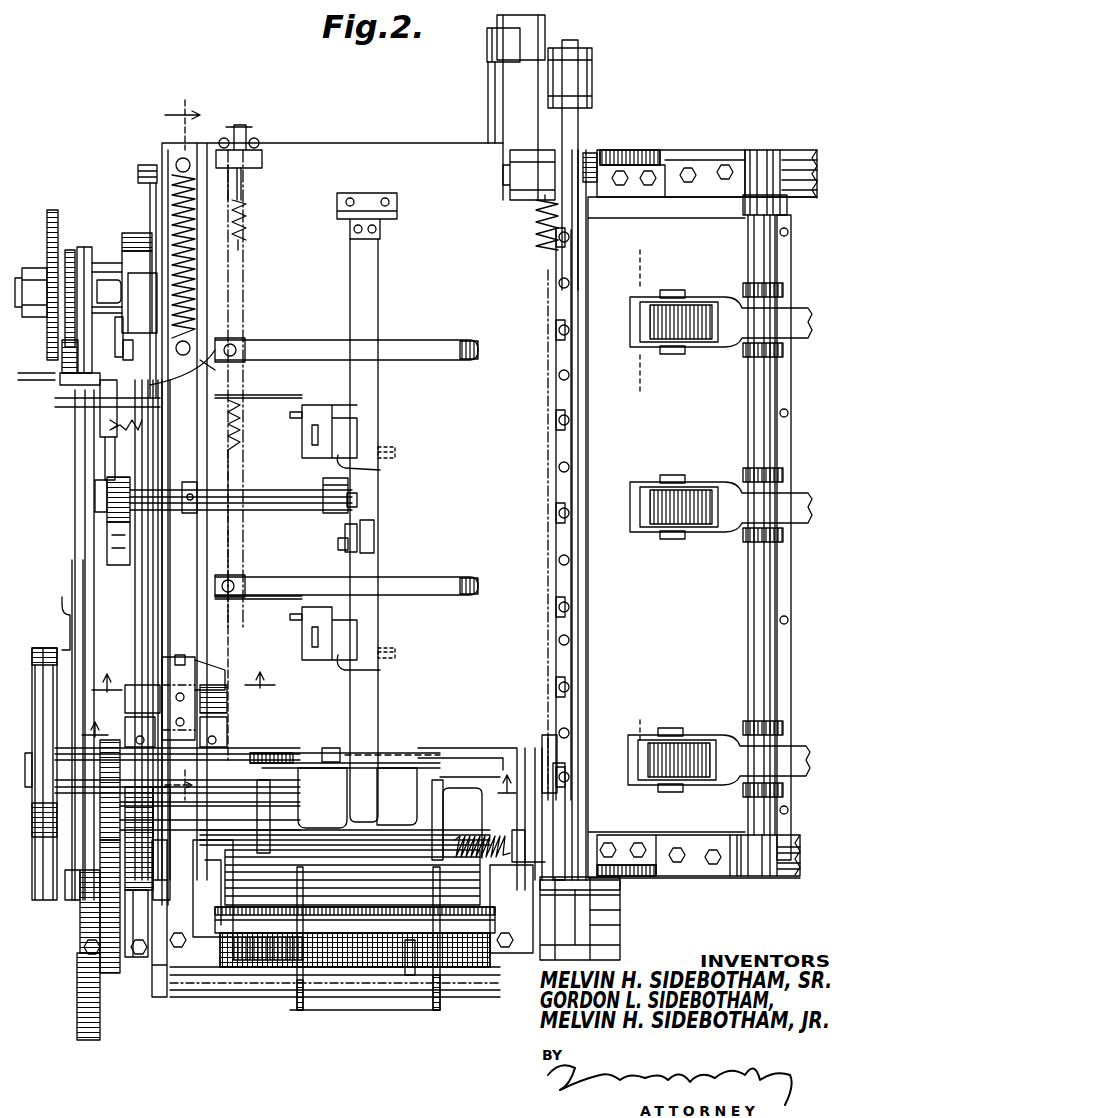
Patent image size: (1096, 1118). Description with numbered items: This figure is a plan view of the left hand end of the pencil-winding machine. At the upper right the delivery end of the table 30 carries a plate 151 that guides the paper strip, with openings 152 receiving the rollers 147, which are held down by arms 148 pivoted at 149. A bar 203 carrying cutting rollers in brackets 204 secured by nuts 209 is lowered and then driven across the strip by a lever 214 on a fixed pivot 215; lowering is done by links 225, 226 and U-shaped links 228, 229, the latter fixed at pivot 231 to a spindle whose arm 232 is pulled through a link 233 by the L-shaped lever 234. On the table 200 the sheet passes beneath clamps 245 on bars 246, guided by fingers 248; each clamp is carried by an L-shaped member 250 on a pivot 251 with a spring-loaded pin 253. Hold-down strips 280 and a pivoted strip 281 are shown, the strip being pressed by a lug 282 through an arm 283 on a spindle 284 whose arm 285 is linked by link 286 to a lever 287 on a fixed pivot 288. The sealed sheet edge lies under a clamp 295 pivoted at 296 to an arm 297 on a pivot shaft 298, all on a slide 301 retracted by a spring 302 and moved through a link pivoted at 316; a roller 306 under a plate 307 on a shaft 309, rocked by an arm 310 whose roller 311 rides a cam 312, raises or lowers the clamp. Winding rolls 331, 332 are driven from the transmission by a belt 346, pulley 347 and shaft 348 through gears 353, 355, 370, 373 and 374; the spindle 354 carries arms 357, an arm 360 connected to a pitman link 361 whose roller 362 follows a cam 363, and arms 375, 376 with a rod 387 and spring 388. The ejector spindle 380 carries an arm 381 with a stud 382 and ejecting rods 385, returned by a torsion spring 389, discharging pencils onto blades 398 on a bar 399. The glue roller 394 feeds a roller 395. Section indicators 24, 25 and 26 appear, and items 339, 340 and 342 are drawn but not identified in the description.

The section line 24 is at (505, 795).
The section line 25 is at (192, 672).
The section line 26 is at (213, 441).
The table 30 is at (718, 205).
The rollers 147 is at (652, 318).
The arms 148 is at (735, 312).
The pivot 149 is at (756, 372).
The plate 151 is at (678, 225).
The openings 152 is at (645, 372).
The table 200 is at (322, 163).
The bar 203 is at (578, 52).
The bracket 204 is at (556, 400).
The nuts 209 is at (558, 250).
The lever 214 is at (575, 928).
The fixed pivot 215 is at (618, 940).
The link 225 is at (555, 760).
The link 226 is at (590, 80).
The U-shaped link 228 is at (560, 780).
The U-shaped link 229 is at (575, 140).
The pivot 231 is at (508, 180).
The arm 232 is at (528, 115).
The link 233 is at (508, 40).
The L-shaped lever 234 is at (490, 110).
The clamps 245 is at (380, 470).
The bars 246 is at (378, 432).
The guide fingers 248 is at (392, 452).
The L-shaped member 250 is at (316, 405).
The pivot 251 is at (297, 412).
The pin 253 is at (312, 435).
The transverse hold-down strips 280 is at (422, 357).
The longitudinally extending strip 281 is at (360, 486).
The lug 282 is at (372, 530).
The arm 283 is at (342, 530).
The spindle 284 is at (288, 482).
The arm 285 is at (100, 470).
The link 286 is at (105, 450).
The lever 287 is at (215, 352).
The fixed pivot 288 is at (140, 172).
The clamp 295 is at (395, 760).
The pivot 296 is at (330, 760).
The arm 297 is at (325, 748).
The pivot shaft 298 is at (305, 740).
The slide 301 is at (200, 578).
The spring 302 is at (195, 270).
The roller 306 is at (175, 657).
The plate 307 is at (165, 665).
The shaft 309 is at (145, 592).
The downwardly extending arm 310 is at (230, 282).
The roller 311 is at (100, 280).
The cam 312 is at (132, 240).
The pivot 316 is at (200, 370).
The winding roll 331 is at (330, 822).
The winding roll 332 is at (362, 940).
The spring 339 is at (108, 418).
The hub 340 is at (68, 372).
The gear 342 is at (52, 210).
The belt 346 is at (42, 648).
The pulley 347 is at (62, 605).
The shaft 348 is at (60, 750).
The gear 353 is at (110, 960).
The spindle 354 is at (360, 945).
The gear 355 is at (140, 955).
The arms 357 is at (178, 948).
The arm 360 is at (71, 856).
The pitman link 361 is at (78, 510).
The roller 362 is at (78, 352).
The cam 363 is at (70, 250).
The gear 370 is at (162, 997).
The gear 373 is at (90, 905).
The gear 374 is at (80, 982).
The arm 375 is at (275, 960).
The arm 376 is at (300, 1010).
The spindle 380 is at (385, 850).
The arm 381 is at (190, 960).
The stud 382 is at (215, 940).
The ejecting rods 385 is at (440, 765).
The rod 387 is at (225, 520).
The spring 388 is at (235, 408).
The torsion spring 389 is at (545, 790).
The corrugated glue roller 394 is at (437, 1010).
The roller 395 is at (410, 975).
The blades 398 is at (440, 1012).
The bar 399 is at (420, 970).